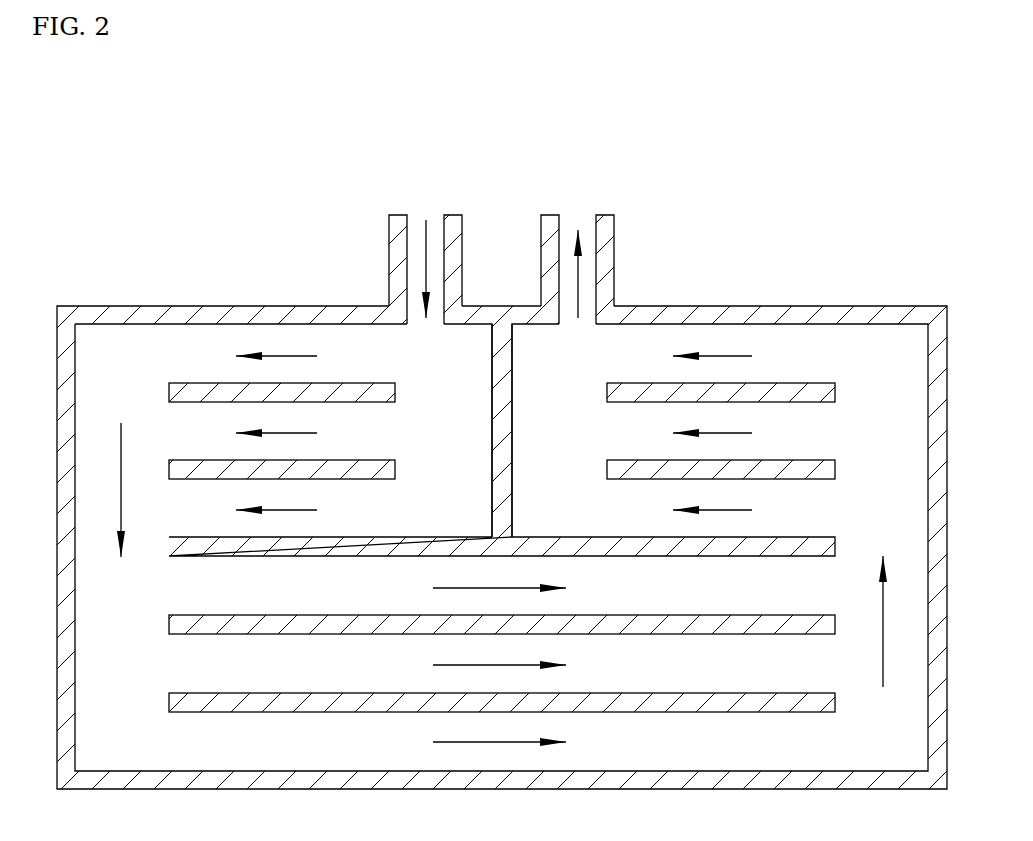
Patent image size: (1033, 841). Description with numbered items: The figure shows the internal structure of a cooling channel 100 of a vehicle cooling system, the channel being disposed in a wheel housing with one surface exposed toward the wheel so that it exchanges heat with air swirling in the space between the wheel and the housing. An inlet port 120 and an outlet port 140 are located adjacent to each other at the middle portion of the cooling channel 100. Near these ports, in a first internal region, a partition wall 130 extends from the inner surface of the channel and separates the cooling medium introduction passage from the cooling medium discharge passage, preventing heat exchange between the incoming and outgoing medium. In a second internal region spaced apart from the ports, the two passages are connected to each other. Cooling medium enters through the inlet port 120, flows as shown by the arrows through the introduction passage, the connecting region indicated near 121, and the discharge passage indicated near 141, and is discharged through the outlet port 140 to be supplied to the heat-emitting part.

The cooling channel 100 is at (728, 250).
The inlet port 120 is at (426, 216).
The first flow path 121 is at (300, 355).
The partition wall 130 is at (502, 398).
The outlet port 140 is at (582, 216).
The second flow path 141 is at (730, 355).